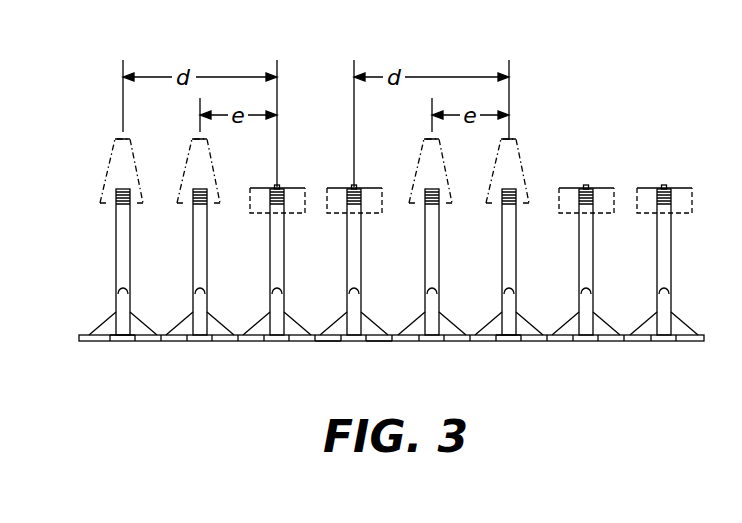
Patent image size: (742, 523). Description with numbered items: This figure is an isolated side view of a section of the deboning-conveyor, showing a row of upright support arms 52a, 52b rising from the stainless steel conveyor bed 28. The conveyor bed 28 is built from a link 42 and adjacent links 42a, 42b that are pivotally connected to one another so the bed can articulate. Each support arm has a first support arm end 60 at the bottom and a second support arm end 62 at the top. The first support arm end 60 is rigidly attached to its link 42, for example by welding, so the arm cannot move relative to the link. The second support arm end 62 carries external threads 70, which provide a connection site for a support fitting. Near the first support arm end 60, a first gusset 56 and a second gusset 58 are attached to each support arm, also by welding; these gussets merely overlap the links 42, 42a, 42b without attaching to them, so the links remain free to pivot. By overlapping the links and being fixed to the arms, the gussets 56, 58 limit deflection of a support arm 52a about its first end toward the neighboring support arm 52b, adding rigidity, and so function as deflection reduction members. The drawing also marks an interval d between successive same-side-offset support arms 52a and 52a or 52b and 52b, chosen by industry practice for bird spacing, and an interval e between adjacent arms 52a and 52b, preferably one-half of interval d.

The conveyor bed 28 is at (66, 339).
The link 42 is at (270, 342).
The adjacent link 42a is at (332, 342).
The adjacent link 42b is at (378, 342).
The support arm 52a is at (117, 232).
The support arm 52b is at (193, 262).
The first gusset 56 is at (180, 328).
The second gusset 58 is at (216, 328).
The first support arm end 60 is at (126, 342).
The second support arm end 62 is at (118, 192).
The external threads 70 is at (194, 197).